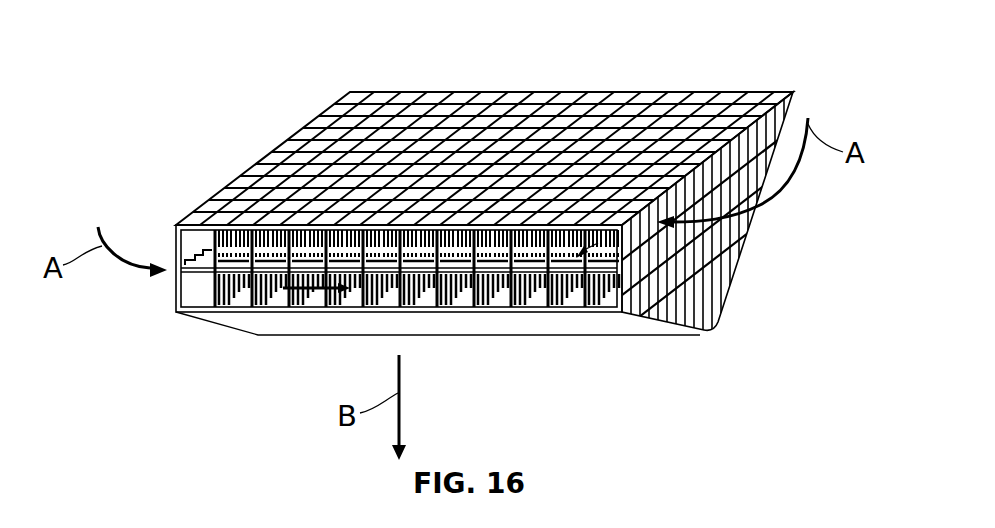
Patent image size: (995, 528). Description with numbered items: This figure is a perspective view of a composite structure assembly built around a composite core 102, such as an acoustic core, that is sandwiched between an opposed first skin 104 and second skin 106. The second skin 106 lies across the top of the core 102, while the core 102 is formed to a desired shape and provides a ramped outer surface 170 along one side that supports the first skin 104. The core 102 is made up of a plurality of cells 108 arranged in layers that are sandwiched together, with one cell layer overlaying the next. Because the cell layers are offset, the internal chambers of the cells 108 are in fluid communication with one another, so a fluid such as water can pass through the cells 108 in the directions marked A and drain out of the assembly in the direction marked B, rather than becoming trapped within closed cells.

The composite core 102 is at (200, 302).
The first skin 104 is at (668, 334).
The second skin 106 is at (588, 117).
The cells 108 is at (413, 245).
The ramped outer surface 170 is at (697, 333).